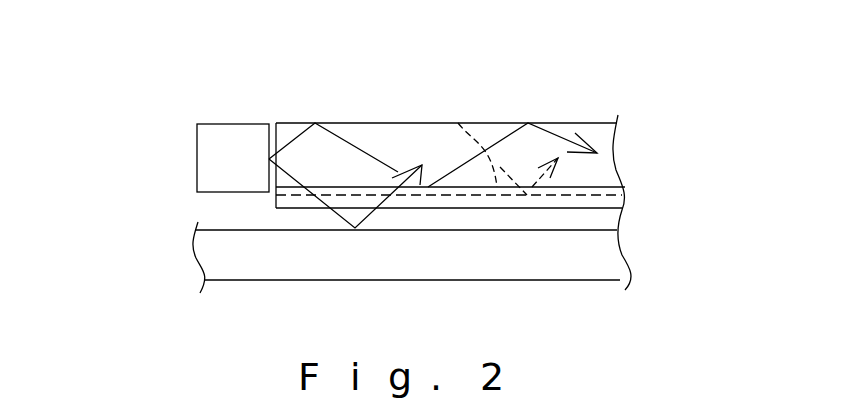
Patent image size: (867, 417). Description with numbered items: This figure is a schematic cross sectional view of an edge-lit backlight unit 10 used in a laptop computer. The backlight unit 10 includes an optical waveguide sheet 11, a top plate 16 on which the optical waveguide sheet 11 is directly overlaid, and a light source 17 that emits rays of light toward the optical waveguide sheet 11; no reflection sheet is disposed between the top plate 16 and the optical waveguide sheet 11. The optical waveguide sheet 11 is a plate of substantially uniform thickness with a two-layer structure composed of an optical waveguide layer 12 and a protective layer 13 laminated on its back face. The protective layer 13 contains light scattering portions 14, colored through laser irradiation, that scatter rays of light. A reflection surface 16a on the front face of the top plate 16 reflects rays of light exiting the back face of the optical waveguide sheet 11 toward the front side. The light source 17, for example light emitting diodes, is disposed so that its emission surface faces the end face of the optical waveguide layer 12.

The backlight unit 10 is at (650, 107).
The optical waveguide sheet 11 is at (288, 122).
The optical waveguide layer 12 is at (396, 128).
The protective layer 13 is at (470, 200).
The light scattering portions 14 is at (458, 123).
The top plate 16 is at (195, 230).
The reflection surface 16a is at (620, 232).
The light source 17 is at (197, 170).